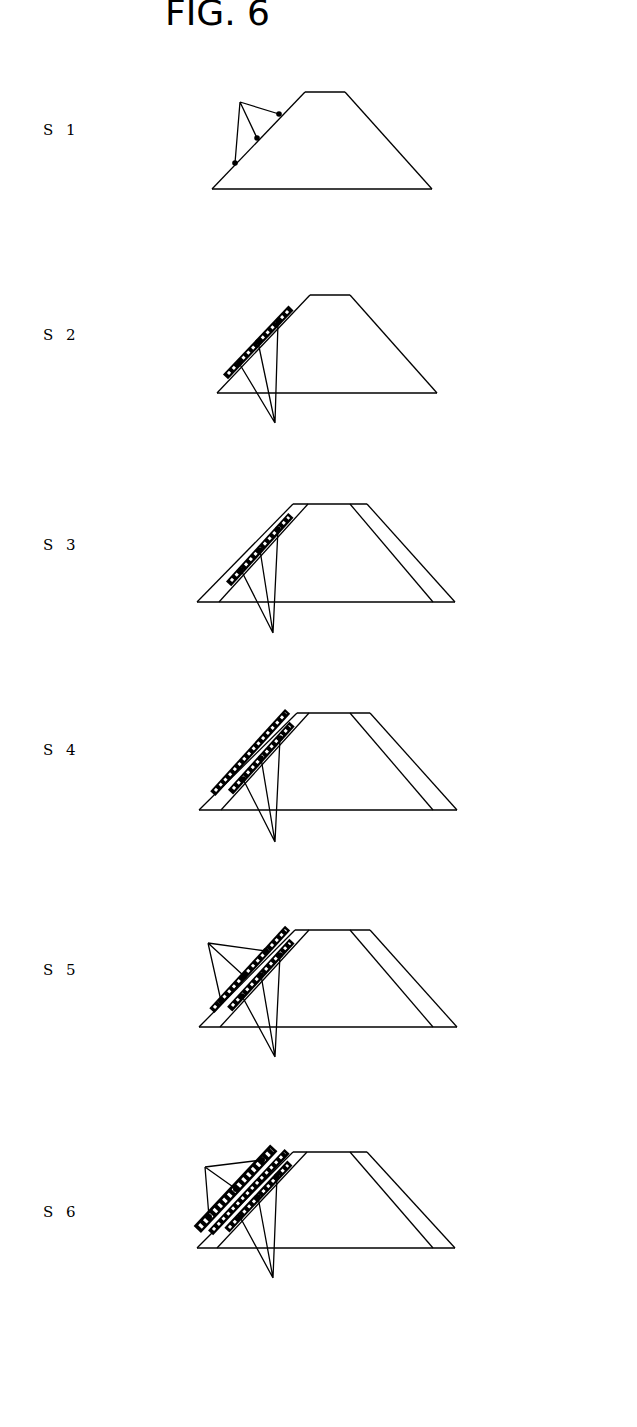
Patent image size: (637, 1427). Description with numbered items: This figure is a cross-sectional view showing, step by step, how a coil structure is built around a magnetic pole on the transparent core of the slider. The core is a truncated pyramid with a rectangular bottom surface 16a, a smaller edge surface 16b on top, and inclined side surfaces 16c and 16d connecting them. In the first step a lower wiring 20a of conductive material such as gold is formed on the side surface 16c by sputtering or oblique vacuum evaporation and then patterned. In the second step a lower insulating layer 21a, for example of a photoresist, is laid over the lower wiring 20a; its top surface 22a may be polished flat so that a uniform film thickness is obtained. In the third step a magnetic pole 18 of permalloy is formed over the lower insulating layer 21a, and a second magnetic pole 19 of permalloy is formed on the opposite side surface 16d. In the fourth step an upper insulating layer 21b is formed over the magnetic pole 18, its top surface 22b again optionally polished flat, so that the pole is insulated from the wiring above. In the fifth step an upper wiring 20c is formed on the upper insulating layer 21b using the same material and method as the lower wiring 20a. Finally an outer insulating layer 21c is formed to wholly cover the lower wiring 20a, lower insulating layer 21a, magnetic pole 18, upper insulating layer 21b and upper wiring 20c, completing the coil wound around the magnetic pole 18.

The bottom surface 16a is at (322, 190).
The edge surface 16b is at (325, 92).
The side surface 16c is at (222, 176).
The side surface 16d is at (400, 146).
The magnetic pole 18 is at (248, 552).
The magnetic pole 19 is at (398, 552).
The lower wiring 20a is at (258, 691).
The upper wiring 20c is at (221, 1074).
The lower insulating layer 21a is at (252, 343).
The upper insulating layer 21b is at (245, 756).
The outer insulating layer 21c is at (200, 1222).
The top surface of the lower insulating layer 22a is at (275, 318).
The top surface of the upper insulating layer 22b is at (265, 735).